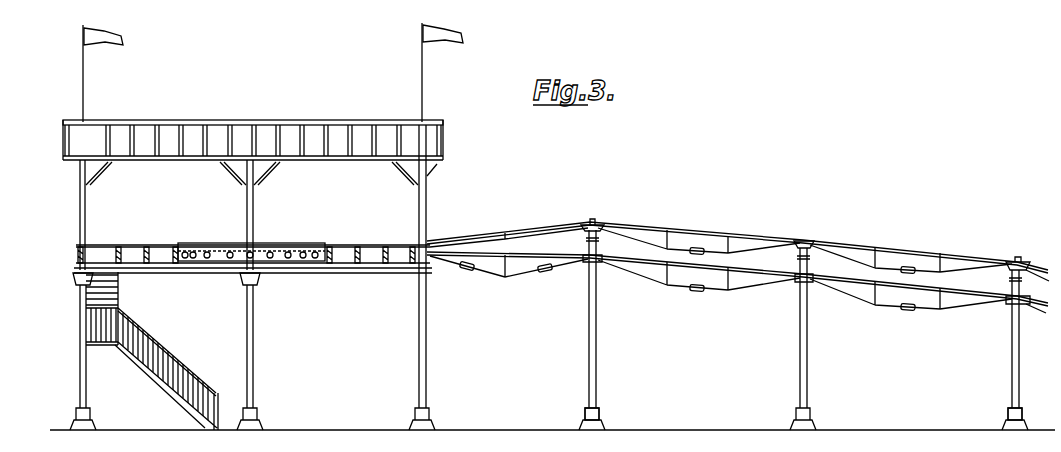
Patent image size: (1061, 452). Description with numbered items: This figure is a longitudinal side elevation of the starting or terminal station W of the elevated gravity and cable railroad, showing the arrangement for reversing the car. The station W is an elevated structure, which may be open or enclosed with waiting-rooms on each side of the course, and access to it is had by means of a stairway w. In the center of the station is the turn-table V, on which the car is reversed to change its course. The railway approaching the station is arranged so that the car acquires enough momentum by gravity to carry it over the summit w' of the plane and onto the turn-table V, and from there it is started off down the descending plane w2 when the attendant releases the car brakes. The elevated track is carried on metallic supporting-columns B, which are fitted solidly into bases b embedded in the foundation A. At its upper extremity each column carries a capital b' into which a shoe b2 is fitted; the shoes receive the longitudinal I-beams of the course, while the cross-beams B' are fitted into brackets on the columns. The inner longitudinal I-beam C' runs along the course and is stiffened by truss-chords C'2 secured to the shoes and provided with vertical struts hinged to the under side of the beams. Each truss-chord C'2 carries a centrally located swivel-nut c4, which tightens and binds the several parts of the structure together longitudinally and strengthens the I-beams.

The foundation A is at (552, 423).
The supporting-column B is at (697, 330).
The cross-beam B' is at (1005, 350).
The base b is at (803, 415).
The shoe b2 is at (589, 221).
The capital b' is at (806, 290).
The turn-table V is at (216, 245).
The starting or terminal station W is at (263, 226).
The stairway w is at (152, 351).
The summit of the plane w' is at (738, 242).
The descending plane w2 is at (737, 275).
The inner longitudinal I-beam C' is at (685, 268).
The truss-chord C'2 is at (758, 277).
The swivel-nut c4 is at (687, 287).